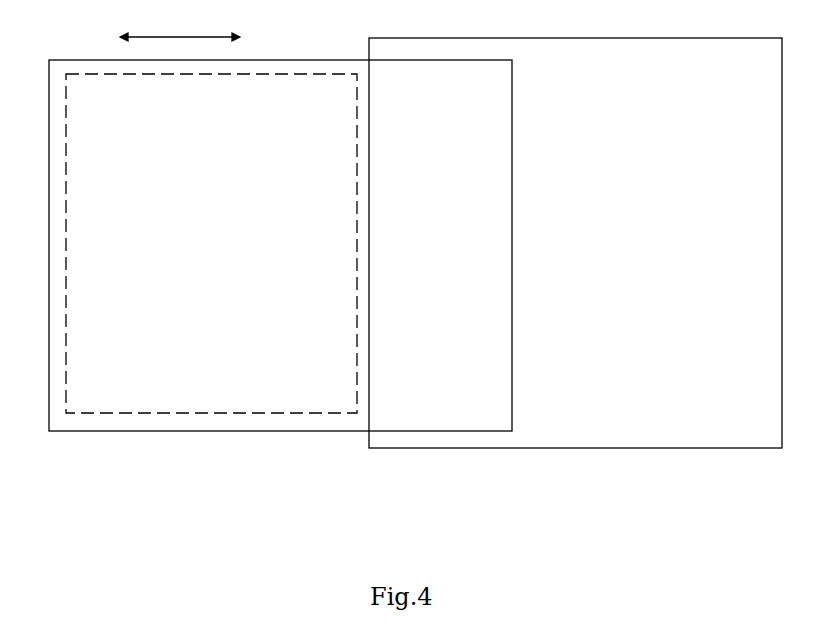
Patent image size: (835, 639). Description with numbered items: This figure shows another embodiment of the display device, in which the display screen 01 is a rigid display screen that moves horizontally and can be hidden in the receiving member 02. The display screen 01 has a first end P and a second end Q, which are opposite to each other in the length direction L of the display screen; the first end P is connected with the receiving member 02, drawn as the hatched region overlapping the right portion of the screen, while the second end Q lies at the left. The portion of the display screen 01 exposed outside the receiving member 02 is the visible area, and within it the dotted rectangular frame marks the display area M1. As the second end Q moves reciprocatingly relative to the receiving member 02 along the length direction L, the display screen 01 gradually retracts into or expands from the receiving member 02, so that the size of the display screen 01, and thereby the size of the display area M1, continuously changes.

The display screen 01 is at (261, 292).
The receiving member 02 is at (575, 282).
The display area M1 is at (211, 243).
The second end Q is at (19, 244).
The first end P is at (544, 252).
The length direction L is at (176, 23).